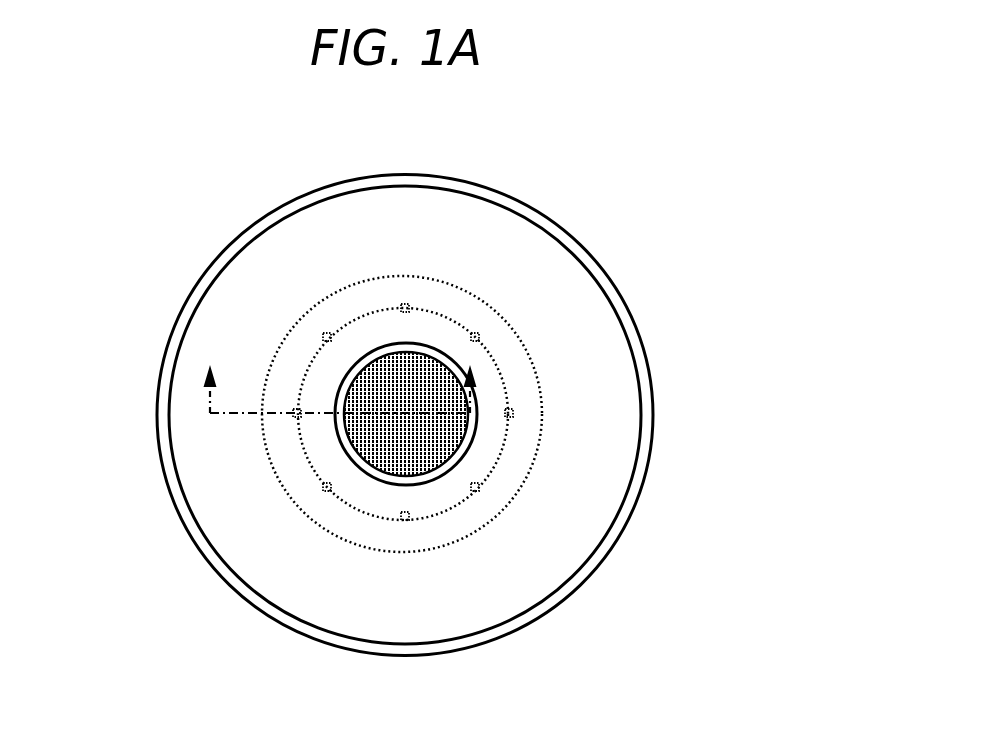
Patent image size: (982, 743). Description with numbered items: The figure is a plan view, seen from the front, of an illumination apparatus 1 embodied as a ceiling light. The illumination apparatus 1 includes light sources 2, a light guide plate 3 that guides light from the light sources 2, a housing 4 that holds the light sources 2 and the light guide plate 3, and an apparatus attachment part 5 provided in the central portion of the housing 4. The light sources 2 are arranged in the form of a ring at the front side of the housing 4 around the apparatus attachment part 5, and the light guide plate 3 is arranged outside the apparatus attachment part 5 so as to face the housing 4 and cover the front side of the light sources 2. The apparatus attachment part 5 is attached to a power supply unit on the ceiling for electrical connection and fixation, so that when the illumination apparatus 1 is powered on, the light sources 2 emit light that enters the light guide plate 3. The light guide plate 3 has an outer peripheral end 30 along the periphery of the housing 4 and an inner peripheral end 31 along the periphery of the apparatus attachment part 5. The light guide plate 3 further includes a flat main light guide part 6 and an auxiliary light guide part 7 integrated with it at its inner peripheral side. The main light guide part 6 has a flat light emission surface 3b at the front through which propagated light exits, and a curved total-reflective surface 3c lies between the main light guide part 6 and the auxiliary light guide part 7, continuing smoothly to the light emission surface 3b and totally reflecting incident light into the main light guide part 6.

The illumination apparatus 1 is at (616, 169).
The light sources 2 is at (475, 332).
The light guide plate 3 is at (128, 160).
The light emission surface 3b is at (480, 450).
The curved total-reflective surface 3c is at (290, 357).
The housing 4 is at (643, 370).
The apparatus attachment part 5 is at (368, 432).
The main light guide part 6 is at (313, 257).
The auxiliary light guide part 7 is at (362, 340).
The outer peripheral end 30 is at (165, 415).
The inner peripheral end 31 is at (345, 432).